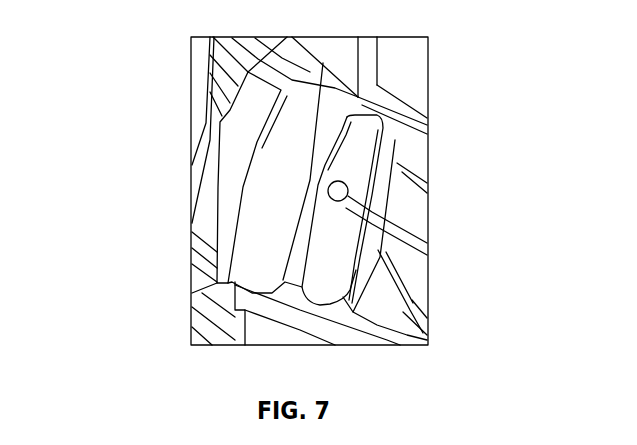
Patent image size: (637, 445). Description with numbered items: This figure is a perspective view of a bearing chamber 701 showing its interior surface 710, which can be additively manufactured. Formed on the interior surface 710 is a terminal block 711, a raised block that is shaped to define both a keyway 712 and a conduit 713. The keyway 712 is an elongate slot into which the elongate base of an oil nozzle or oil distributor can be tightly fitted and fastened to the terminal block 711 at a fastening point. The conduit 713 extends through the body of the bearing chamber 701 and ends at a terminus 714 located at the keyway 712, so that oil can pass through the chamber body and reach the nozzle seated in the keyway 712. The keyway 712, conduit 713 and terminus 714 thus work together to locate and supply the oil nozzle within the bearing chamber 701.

The bearing chamber 701 is at (190, 126).
The interior surface 710 is at (210, 162).
The terminal block 711 is at (262, 170).
The keyway 712 is at (365, 157).
The conduit 713 is at (348, 190).
The terminus 714 is at (427, 243).